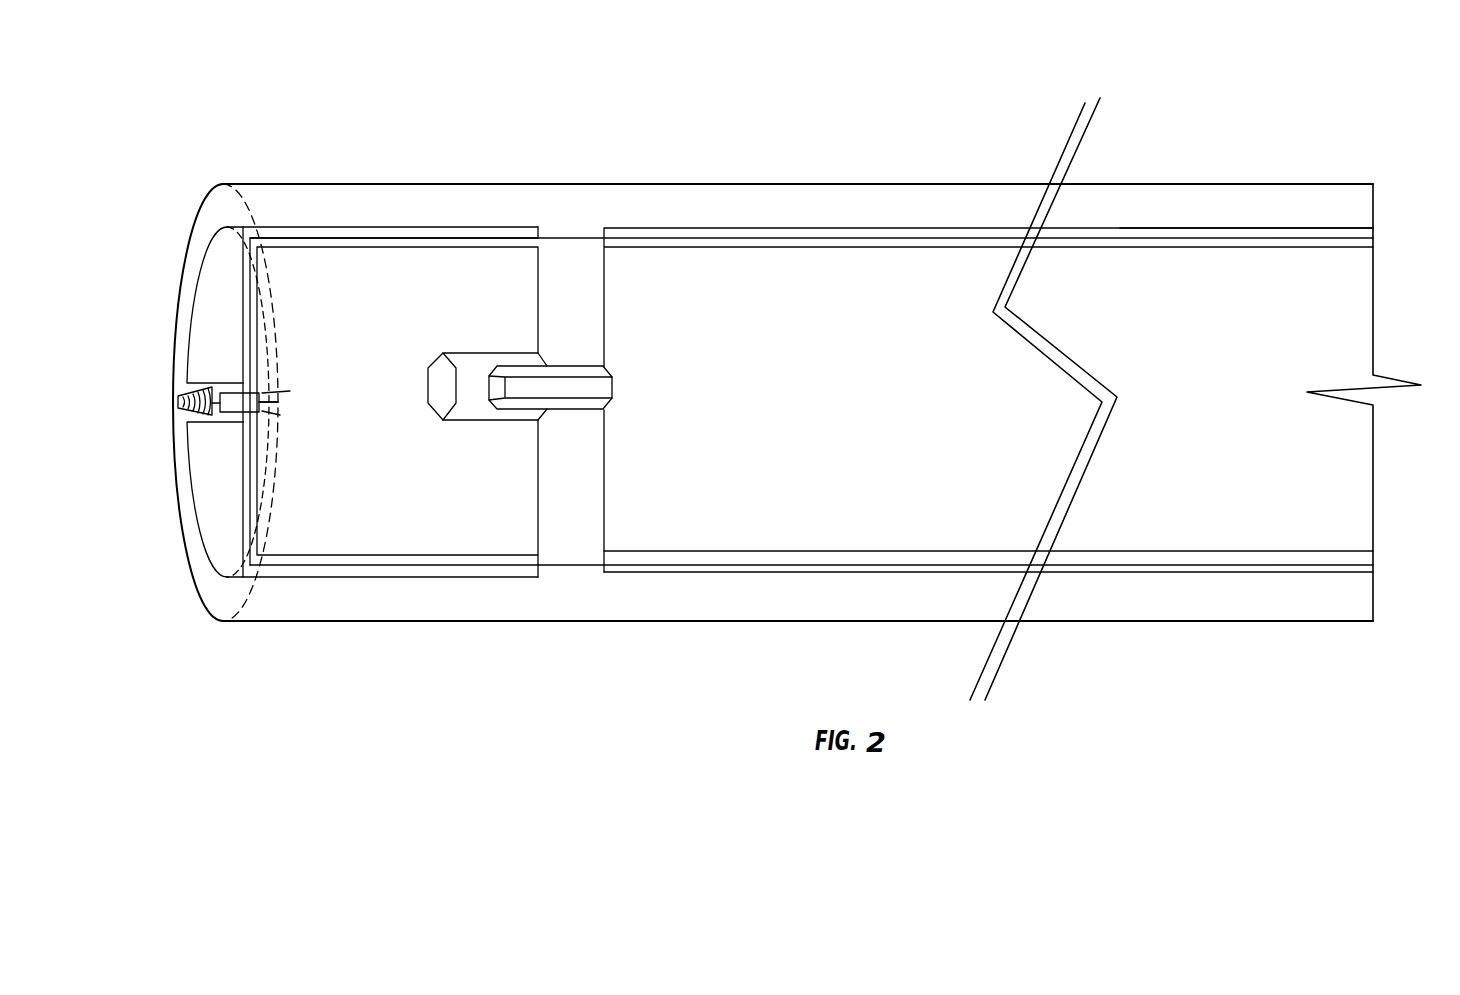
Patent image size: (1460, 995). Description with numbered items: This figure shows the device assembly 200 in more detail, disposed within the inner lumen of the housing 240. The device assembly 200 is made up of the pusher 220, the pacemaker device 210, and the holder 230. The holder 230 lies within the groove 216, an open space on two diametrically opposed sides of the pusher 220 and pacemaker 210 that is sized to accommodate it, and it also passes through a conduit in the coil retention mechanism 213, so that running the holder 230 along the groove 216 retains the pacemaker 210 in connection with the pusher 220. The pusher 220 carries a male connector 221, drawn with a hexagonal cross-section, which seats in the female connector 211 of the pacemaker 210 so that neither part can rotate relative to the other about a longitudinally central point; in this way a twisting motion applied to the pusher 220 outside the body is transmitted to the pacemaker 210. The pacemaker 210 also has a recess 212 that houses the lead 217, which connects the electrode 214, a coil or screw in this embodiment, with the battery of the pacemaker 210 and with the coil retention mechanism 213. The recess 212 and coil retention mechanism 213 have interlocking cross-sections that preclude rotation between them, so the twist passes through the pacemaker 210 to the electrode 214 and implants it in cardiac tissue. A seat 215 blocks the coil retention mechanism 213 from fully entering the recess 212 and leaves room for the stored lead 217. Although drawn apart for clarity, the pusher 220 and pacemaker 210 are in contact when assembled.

The device assembly 200 is at (1227, 652).
The pacemaker device 210 is at (386, 525).
The female connector 211 is at (471, 403).
The recess 212 is at (262, 412).
The coil retention mechanism 213 is at (255, 402).
The electrode 214 is at (218, 389).
The seat 215 is at (290, 391).
The groove 216 is at (632, 247).
The lead 217 is at (278, 402).
The pusher 220 is at (1206, 267).
The male connector 221 is at (571, 388).
The holder 230 is at (1357, 568).
The housing 240 is at (922, 184).